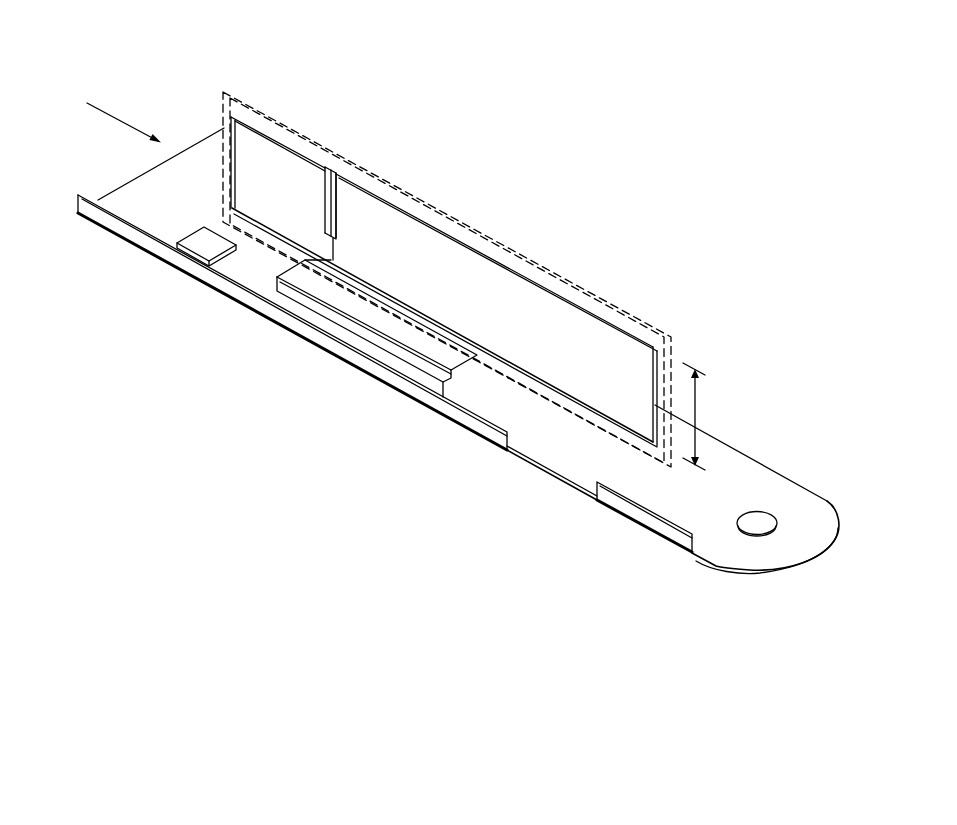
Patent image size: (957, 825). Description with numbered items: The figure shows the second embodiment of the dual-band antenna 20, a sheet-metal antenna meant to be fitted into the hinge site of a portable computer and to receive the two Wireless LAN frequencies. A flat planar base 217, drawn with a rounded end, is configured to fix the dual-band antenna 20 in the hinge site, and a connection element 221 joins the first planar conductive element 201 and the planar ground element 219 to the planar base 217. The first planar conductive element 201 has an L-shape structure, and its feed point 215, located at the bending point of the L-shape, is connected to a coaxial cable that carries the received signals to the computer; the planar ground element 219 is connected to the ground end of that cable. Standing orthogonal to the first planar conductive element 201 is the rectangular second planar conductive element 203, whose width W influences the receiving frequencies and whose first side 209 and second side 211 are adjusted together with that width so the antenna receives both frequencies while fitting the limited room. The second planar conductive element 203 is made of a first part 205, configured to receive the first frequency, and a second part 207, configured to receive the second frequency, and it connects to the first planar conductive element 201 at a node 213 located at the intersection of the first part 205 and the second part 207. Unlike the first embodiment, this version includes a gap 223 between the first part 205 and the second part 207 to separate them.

The dual-band antenna 20 is at (656, 137).
The first planar conductive element 201 is at (373, 330).
The second planar conductive element 203 is at (622, 308).
The first part 205 is at (277, 95).
The second part 207 is at (487, 240).
The first side 209 is at (303, 150).
The second side 211 is at (416, 205).
The node 213 is at (322, 259).
The feed point 215 is at (296, 286).
The planar base 217 is at (777, 495).
The planar ground element 219 is at (203, 243).
The connection element 221 is at (407, 387).
The gap 223 is at (334, 174).